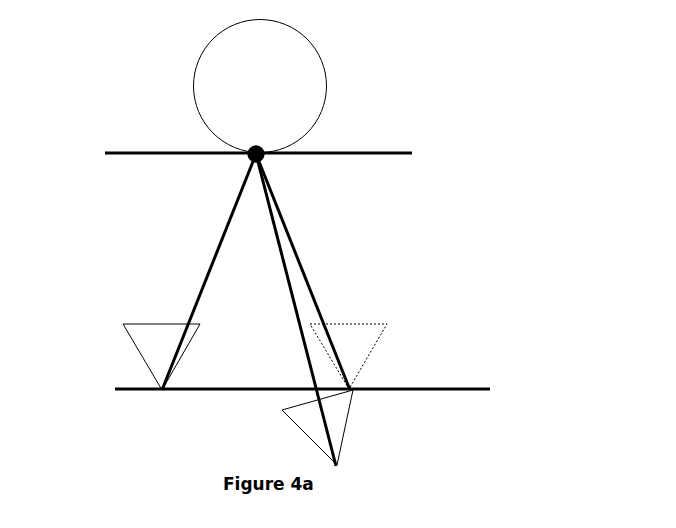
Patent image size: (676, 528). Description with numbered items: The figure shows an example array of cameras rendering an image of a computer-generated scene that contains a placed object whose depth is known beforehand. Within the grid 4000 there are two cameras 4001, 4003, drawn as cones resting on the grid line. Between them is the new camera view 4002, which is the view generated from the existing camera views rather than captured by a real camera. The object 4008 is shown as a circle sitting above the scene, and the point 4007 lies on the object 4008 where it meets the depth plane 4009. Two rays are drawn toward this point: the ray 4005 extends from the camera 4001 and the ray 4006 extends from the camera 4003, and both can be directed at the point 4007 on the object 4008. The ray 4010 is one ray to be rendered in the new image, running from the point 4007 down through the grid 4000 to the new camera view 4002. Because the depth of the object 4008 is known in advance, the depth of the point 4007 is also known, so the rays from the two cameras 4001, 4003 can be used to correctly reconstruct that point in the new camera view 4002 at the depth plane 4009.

The grid 4000 is at (332, 387).
The camera 4001 is at (158, 347).
The new camera view 4002 is at (345, 417).
The camera 4003 is at (358, 353).
The ray 4005 is at (208, 252).
The ray 4006 is at (302, 253).
The point 4007 is at (250, 158).
The object 4008 is at (240, 80).
The depth plane 4009 is at (288, 152).
The ray 4010 is at (298, 328).